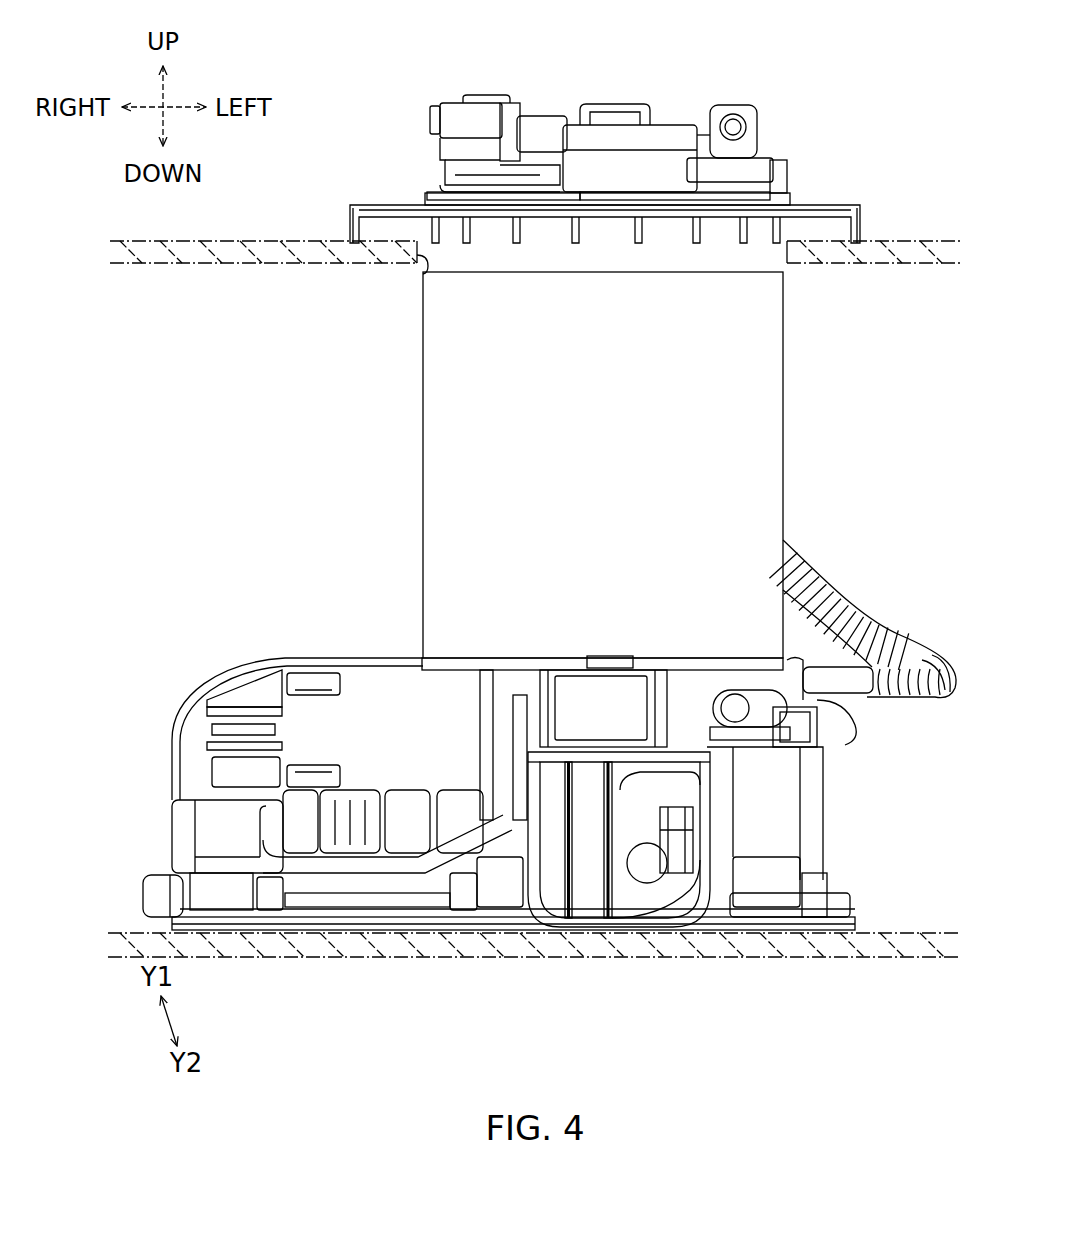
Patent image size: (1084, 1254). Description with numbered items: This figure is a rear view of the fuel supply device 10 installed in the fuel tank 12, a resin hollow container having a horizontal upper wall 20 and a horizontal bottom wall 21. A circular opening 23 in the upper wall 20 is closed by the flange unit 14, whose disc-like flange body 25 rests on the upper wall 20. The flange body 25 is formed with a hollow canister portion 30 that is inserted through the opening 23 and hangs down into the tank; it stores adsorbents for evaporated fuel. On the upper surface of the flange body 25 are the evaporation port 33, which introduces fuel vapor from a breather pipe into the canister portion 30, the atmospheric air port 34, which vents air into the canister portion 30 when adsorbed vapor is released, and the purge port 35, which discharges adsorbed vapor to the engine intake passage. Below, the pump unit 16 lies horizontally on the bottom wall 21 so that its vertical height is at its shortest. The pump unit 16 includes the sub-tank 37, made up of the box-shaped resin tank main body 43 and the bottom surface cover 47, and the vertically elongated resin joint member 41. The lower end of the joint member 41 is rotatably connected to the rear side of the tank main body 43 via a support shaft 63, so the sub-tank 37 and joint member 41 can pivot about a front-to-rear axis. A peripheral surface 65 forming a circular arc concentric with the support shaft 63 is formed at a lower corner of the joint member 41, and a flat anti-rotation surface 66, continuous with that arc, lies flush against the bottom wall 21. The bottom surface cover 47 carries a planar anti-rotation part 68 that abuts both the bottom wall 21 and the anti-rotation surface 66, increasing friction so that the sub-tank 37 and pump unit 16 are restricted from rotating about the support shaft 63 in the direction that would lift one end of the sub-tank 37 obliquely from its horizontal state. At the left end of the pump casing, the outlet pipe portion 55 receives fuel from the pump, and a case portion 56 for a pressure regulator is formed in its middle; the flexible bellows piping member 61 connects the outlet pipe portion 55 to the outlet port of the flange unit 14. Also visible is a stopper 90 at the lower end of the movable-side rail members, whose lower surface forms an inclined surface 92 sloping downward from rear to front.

The fuel supply device 10 is at (800, 70).
The fuel tank 12 is at (897, 236).
The flange unit 14 is at (806, 198).
The pump unit 16 is at (250, 656).
The upper wall 20 is at (258, 250).
The bottom wall 21 is at (319, 960).
The opening 23 is at (425, 279).
The flange body 25 is at (396, 204).
The canister portion 30 is at (786, 445).
The evaporation port 33 is at (450, 103).
The atmospheric air port 34 is at (556, 117).
The purge port 35 is at (732, 105).
The sub-tank 37 is at (170, 818).
The joint member 41 is at (630, 686).
The tank main body 43 is at (181, 843).
The bottom surface cover 47 is at (141, 896).
The outlet pipe portion 55 is at (794, 682).
The case portion 56 is at (858, 730).
The piping member 61 is at (902, 640).
The support shaft 63 is at (647, 930).
The peripheral surface 65 is at (712, 930).
The anti-rotation surface 66 is at (610, 930).
The anti-rotation part 68 is at (575, 930).
The stopper 90 is at (640, 770).
The inclined surface 92 is at (619, 839).